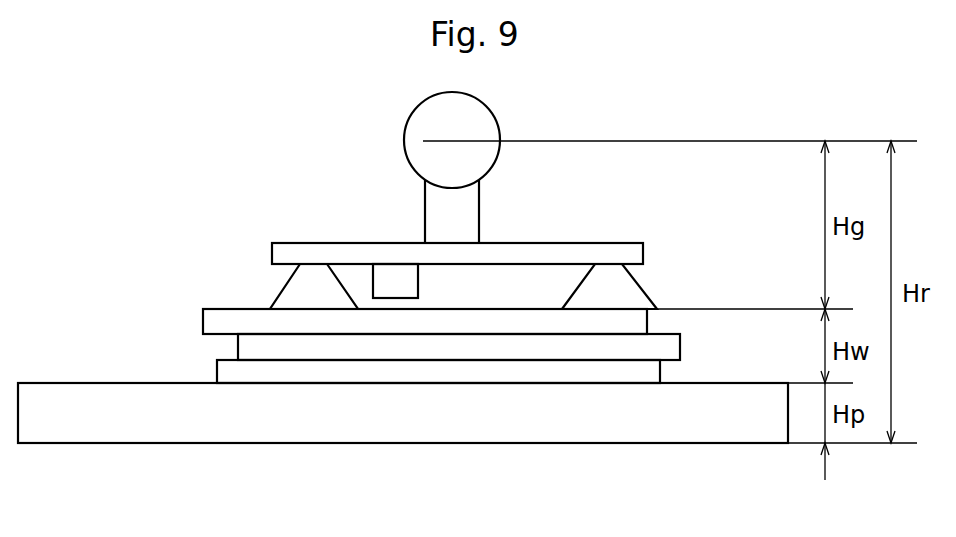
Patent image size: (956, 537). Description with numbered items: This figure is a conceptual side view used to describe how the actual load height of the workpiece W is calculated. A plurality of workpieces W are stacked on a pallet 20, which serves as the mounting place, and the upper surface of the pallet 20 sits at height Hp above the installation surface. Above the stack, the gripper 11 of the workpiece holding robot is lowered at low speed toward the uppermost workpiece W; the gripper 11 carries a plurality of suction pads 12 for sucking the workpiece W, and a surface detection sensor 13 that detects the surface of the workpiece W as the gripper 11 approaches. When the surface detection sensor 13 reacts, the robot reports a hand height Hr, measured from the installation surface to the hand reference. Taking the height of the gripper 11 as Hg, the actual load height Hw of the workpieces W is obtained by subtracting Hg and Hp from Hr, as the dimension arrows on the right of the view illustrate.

The gripper 11 is at (558, 243).
The suction pads 12 is at (307, 283).
The surface detection sensor 13 is at (418, 281).
The pallet 20 is at (68, 382).
The workpiece W is at (510, 323).